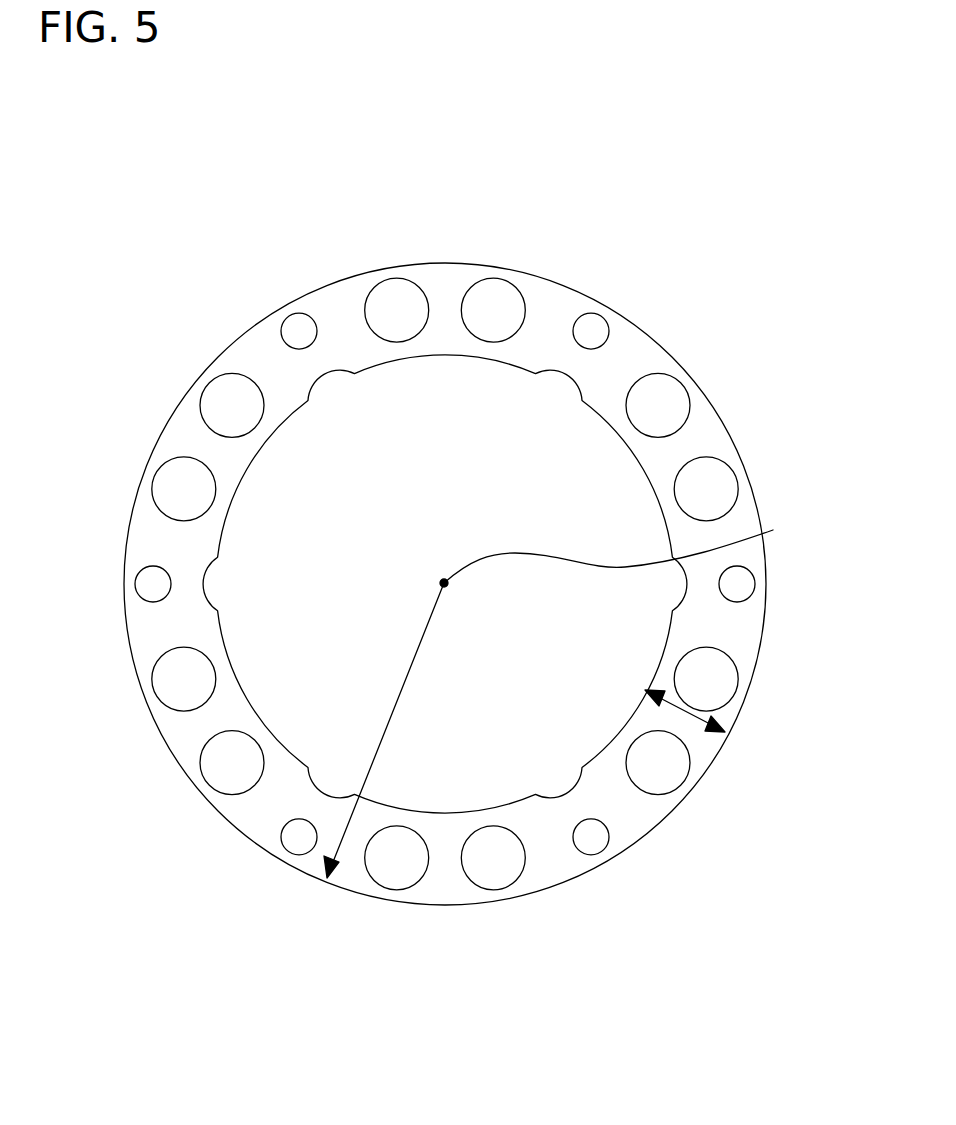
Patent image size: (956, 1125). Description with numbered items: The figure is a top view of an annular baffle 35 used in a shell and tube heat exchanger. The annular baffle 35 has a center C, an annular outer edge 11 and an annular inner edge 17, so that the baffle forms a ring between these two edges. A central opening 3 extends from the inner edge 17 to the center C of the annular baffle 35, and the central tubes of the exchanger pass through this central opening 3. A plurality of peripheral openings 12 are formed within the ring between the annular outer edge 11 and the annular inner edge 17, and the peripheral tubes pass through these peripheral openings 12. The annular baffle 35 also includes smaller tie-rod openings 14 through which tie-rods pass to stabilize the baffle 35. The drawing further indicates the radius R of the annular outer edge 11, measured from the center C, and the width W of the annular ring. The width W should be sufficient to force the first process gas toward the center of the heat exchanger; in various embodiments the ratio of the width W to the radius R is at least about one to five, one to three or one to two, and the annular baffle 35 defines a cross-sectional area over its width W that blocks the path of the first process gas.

The annular baffle 35 is at (201, 226).
The annular outer edge 11 is at (443, 263).
The annular inner edge 17 is at (406, 358).
The central opening 3 is at (594, 500).
The peripheral openings 12 is at (175, 504).
The tie-rod openings 14 is at (140, 589).
The center C is at (618, 552).
The radius R is at (373, 753).
The width W is at (690, 715).